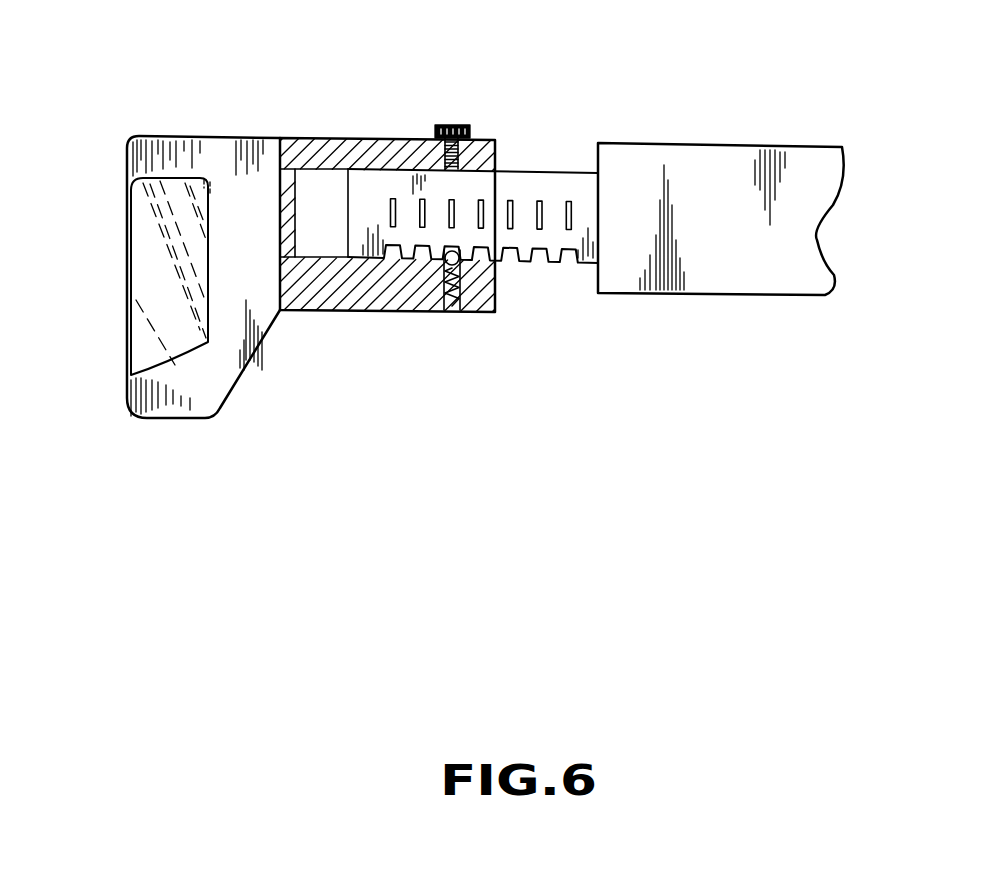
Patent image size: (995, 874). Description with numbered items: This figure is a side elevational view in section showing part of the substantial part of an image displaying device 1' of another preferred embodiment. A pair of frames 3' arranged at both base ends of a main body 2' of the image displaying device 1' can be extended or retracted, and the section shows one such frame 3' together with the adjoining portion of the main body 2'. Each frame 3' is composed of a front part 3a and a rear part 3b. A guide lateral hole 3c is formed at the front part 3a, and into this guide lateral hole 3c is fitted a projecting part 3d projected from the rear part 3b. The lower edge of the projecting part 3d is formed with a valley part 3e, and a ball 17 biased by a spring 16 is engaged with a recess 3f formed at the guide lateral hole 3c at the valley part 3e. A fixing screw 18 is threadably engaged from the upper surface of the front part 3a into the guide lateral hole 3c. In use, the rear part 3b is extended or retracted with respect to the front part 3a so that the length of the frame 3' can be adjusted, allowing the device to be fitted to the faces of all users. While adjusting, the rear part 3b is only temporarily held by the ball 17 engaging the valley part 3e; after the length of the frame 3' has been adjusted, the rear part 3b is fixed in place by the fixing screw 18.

The image displaying device 1' is at (446, 274).
The main body 2' is at (164, 289).
The frame 3' is at (562, 216).
The front part 3a is at (332, 305).
The rear part 3b is at (708, 268).
The guide lateral hole 3c is at (325, 178).
The projecting part 3d is at (552, 187).
The valley part 3e is at (542, 263).
The recess 3f is at (460, 313).
The spring 16 is at (453, 302).
The ball 17 is at (460, 263).
The fixing screw 18 is at (455, 126).